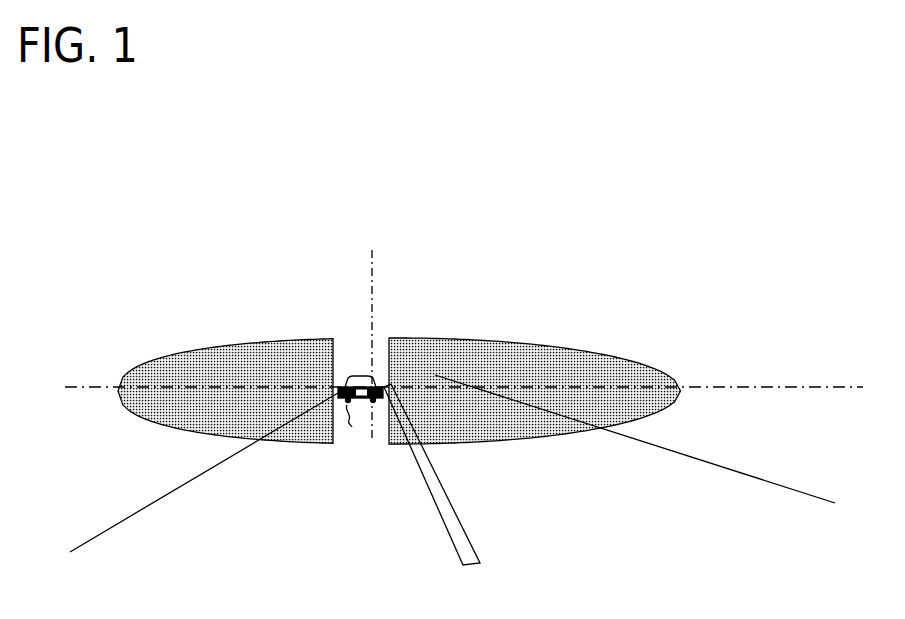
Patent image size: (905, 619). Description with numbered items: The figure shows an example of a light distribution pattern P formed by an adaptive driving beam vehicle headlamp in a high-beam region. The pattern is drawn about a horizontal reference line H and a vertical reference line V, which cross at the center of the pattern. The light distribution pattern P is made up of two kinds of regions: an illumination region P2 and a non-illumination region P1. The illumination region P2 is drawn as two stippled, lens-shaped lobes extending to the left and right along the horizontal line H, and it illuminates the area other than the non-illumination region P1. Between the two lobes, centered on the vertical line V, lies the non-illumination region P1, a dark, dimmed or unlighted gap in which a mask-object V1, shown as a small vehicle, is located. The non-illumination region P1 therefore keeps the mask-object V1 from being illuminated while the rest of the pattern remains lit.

The light distribution pattern P is at (399, 357).
The non-illumination region P1 is at (343, 352).
The illumination region P2 is at (286, 338).
The horizontal line H is at (453, 387).
The vertical line V is at (372, 330).
The mask-object V1 is at (355, 429).